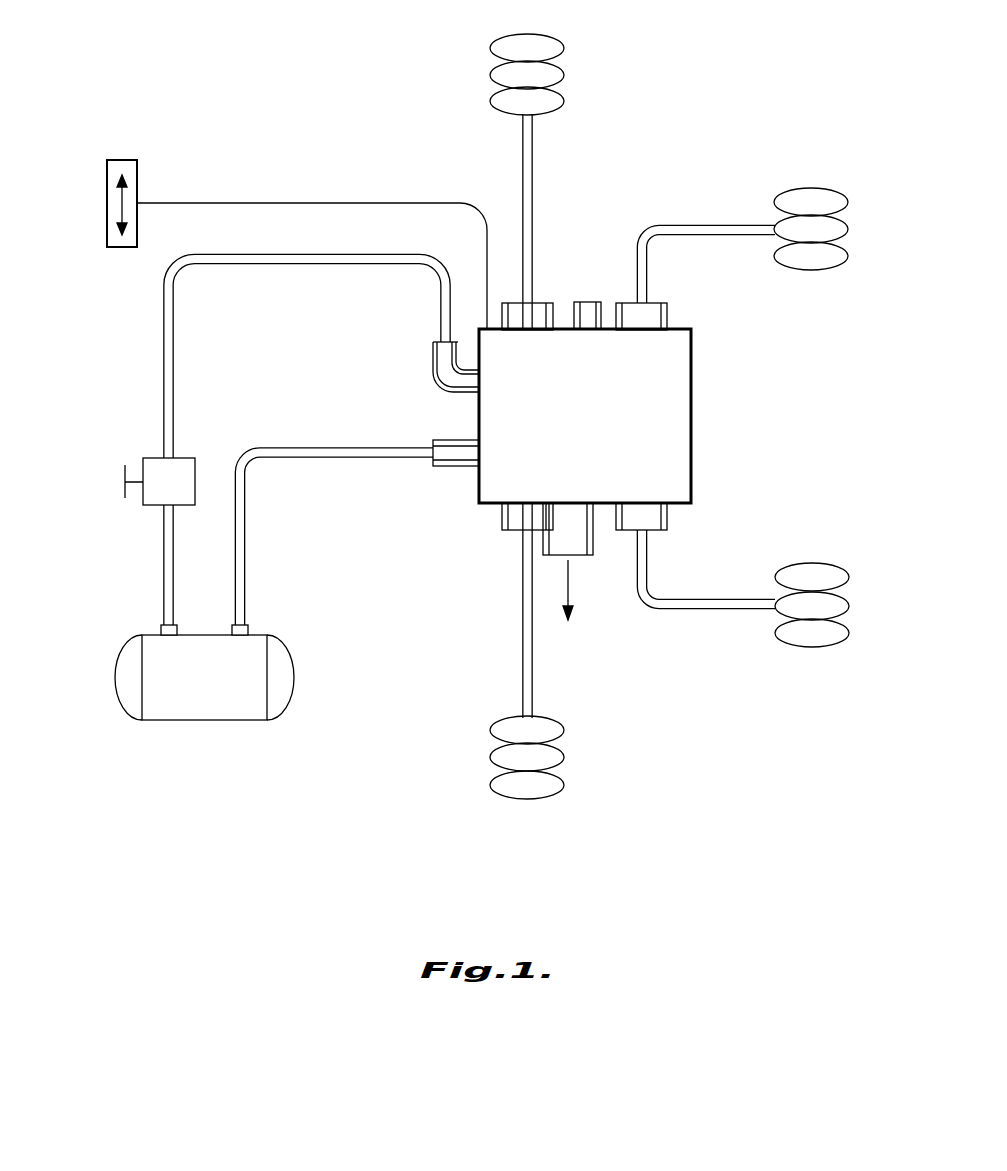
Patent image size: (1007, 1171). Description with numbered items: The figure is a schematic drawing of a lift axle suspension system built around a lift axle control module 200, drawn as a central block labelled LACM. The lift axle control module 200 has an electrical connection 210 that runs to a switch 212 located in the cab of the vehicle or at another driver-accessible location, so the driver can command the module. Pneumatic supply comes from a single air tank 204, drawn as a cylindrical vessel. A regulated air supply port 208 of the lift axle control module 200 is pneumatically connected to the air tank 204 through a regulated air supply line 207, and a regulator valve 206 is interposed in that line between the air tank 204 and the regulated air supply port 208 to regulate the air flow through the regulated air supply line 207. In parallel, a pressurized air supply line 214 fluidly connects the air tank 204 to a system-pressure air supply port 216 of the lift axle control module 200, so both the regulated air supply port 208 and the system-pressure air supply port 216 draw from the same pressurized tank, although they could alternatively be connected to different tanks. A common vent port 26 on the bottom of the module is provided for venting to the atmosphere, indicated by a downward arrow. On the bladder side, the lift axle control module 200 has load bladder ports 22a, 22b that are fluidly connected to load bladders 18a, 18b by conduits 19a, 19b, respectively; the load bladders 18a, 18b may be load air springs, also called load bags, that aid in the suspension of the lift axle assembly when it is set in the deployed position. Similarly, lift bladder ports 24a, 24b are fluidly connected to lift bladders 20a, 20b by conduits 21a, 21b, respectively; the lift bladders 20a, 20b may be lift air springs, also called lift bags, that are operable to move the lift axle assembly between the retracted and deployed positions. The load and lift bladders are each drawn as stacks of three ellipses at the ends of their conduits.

The load bladder 18a is at (496, 62).
The load bladder 18b is at (566, 745).
The conduit 19a is at (530, 158).
The conduit 19b is at (530, 683).
The lift bladder 20a is at (850, 238).
The lift bladder 20b is at (855, 612).
The conduit 21a is at (686, 226).
The conduit 21b is at (724, 610).
The load bladder port 22a is at (538, 302).
The load bladder port 22b is at (502, 520).
The lift bladder port 24a is at (668, 315).
The lift bladder port 24b is at (668, 518).
The common vent port 26 is at (592, 545).
The lift axle control module 200 is at (694, 410).
The air tank 204 is at (128, 645).
The regulator valve 206 is at (150, 458).
The regulated air supply line 207 is at (163, 328).
The regulated air supply port 208 is at (433, 390).
The electrical connection 210 is at (297, 203).
The switch 212 is at (107, 195).
The pressurized air supply line 214 is at (244, 524).
The system-pressure air supply port 216 is at (453, 468).